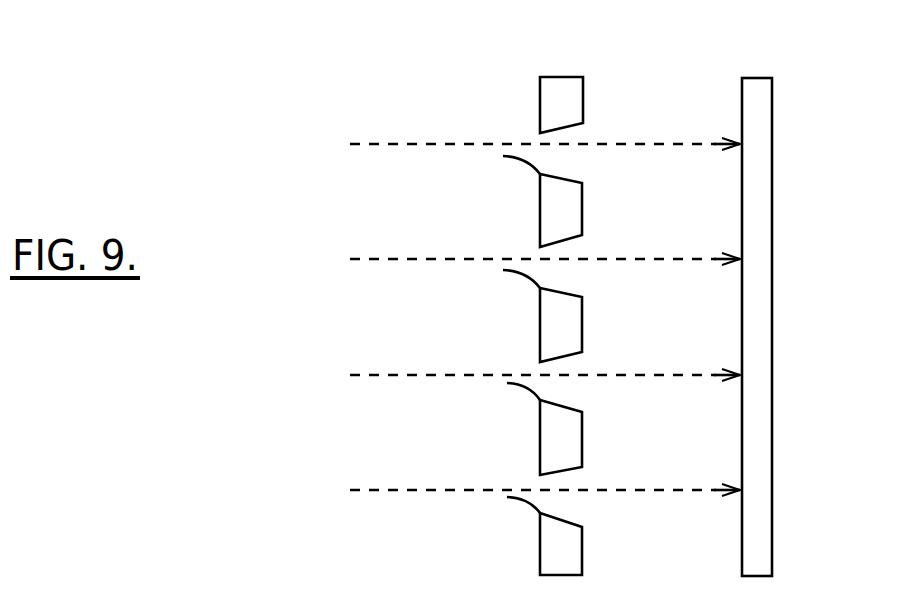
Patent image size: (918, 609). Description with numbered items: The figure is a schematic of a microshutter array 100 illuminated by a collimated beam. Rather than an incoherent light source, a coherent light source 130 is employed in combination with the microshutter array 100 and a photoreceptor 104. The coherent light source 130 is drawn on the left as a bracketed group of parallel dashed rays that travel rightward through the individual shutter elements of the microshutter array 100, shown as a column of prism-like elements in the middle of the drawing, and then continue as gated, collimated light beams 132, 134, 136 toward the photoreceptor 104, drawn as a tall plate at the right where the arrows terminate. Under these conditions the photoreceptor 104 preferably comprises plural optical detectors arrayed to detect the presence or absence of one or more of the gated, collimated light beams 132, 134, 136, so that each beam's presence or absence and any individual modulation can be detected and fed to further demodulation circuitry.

The microshutter array 100 is at (600, 60).
The photoreceptor 104 is at (758, 78).
The coherent light source 130 is at (346, 118).
The gated, collimated light beam 132 is at (665, 140).
The gated, collimated light beam 134 is at (681, 255).
The gated, collimated light beam 136 is at (682, 371).